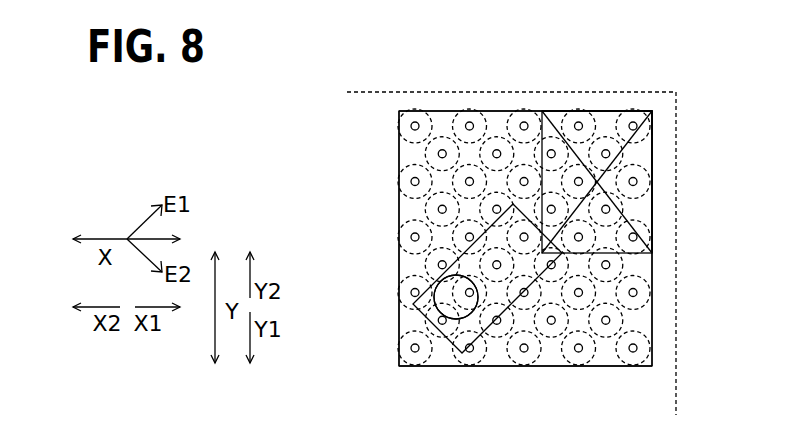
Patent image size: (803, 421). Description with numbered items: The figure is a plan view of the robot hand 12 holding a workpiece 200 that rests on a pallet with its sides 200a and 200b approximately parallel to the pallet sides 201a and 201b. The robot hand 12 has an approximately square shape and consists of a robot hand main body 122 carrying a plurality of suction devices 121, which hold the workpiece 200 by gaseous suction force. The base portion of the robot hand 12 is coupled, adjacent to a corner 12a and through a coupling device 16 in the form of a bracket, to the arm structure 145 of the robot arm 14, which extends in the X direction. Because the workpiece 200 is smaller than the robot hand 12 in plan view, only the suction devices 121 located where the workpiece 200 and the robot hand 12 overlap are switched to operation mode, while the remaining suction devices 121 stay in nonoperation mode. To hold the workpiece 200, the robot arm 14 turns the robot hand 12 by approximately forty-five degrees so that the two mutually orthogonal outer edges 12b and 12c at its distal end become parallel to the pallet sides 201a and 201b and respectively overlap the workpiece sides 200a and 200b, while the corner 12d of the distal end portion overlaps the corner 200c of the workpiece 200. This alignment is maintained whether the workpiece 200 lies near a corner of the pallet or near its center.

The robot hand 12 is at (375, 128).
The corner of base portion 12a is at (398, 366).
The side of robot hand 12b is at (520, 111).
The side of robot hand 12c is at (653, 318).
The corner of distal end portion 12d is at (652, 112).
The suction devices 121 is at (433, 122).
The robot hand main body 122 is at (400, 198).
The robot arm 14 is at (435, 305).
The arm structure 145 is at (456, 297).
The coupling device 16 is at (463, 252).
The workpiece 200 is at (653, 268).
The side of workpiece 200a is at (607, 111).
The side of workpiece 200b is at (653, 204).
The corner of workpiece 200c is at (653, 112).
The side of pallet 201a is at (407, 92).
The side of pallet 201b is at (676, 392).